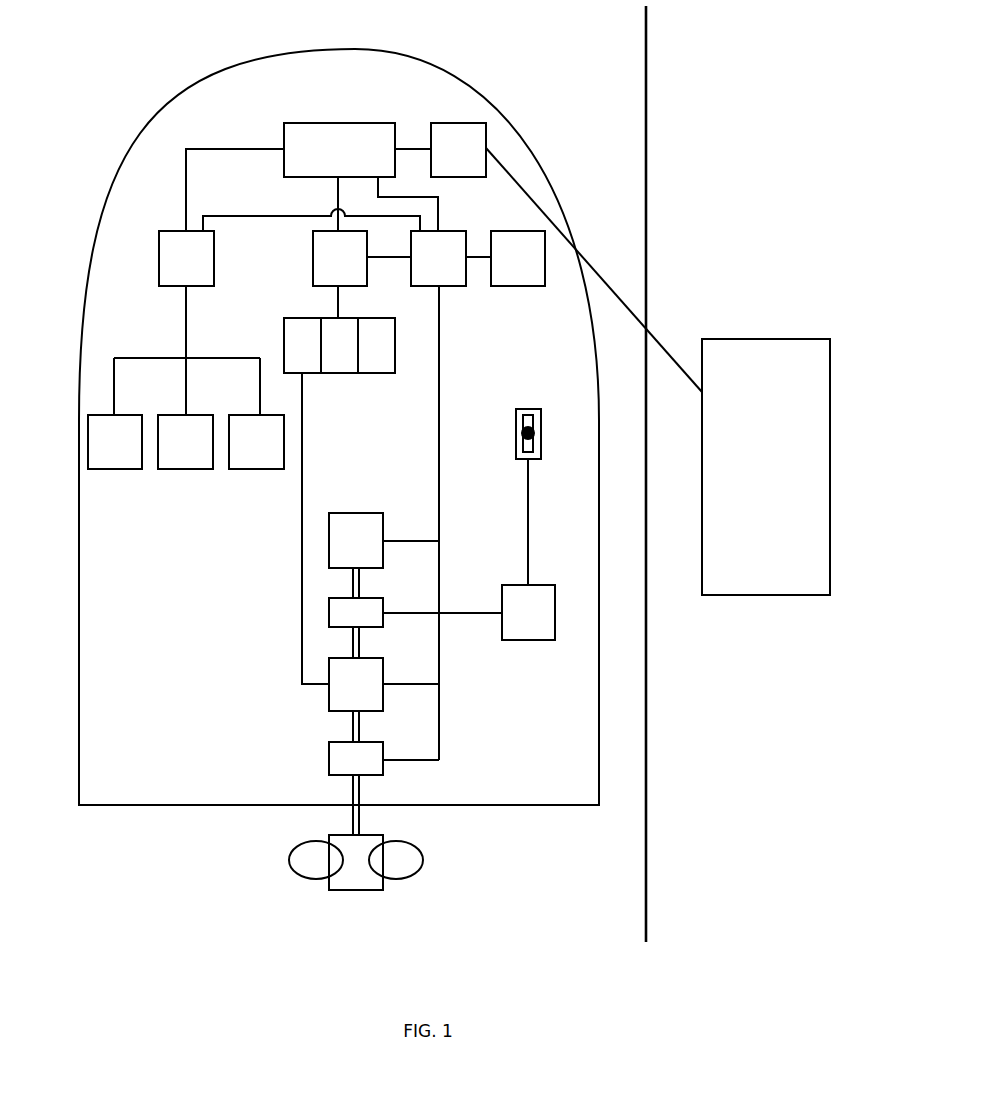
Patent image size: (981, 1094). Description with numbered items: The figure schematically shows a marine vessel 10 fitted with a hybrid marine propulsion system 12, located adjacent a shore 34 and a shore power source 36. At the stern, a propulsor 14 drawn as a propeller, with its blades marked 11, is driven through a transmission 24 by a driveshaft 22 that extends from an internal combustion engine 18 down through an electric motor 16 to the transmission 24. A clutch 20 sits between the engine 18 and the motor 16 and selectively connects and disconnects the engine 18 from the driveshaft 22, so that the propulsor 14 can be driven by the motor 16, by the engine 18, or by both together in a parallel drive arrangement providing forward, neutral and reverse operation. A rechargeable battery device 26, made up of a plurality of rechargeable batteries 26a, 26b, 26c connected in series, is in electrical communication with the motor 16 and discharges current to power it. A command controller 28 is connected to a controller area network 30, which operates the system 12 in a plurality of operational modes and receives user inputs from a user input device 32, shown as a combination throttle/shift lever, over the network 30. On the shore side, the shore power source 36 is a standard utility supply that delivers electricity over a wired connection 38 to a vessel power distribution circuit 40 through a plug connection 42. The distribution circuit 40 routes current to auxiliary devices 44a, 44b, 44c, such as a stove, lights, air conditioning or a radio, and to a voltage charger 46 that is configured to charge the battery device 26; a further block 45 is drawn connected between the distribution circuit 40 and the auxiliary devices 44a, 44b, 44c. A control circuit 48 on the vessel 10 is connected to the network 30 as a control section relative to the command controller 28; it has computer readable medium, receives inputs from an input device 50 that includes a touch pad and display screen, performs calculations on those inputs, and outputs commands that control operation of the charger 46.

The marine vessel 10 is at (261, 63).
The propeller 11 is at (340, 890).
The hybrid marine propulsion system 12 is at (258, 553).
The propulsor 14 is at (356, 862).
The electric motor 16 is at (329, 667).
The internal combustion engine 18 is at (353, 513).
The clutch 20 is at (329, 616).
The driveshaft 22 is at (362, 584).
The transmission 24 is at (329, 758).
The rechargeable battery device 26 is at (310, 347).
The rechargeable battery 26a is at (300, 347).
The rechargeable battery 26b is at (348, 373).
The rechargeable battery 26c is at (378, 373).
The command controller 28 is at (469, 612).
The controller area network 30 is at (439, 332).
The user input device 32 is at (541, 432).
The shore 34 is at (646, 172).
The shore power source 36 is at (766, 467).
The wired connection 38 is at (620, 299).
The vessel power distribution circuit 40 is at (334, 123).
The plug connection 42 is at (451, 123).
The auxiliary device 44a is at (108, 469).
The auxiliary device 44b is at (183, 469).
The auxiliary device 44c is at (258, 469).
The sensor interface 45 is at (159, 244).
The voltage charger 46 is at (313, 243).
The control circuit 48 is at (450, 231).
The input device 50 is at (525, 286).